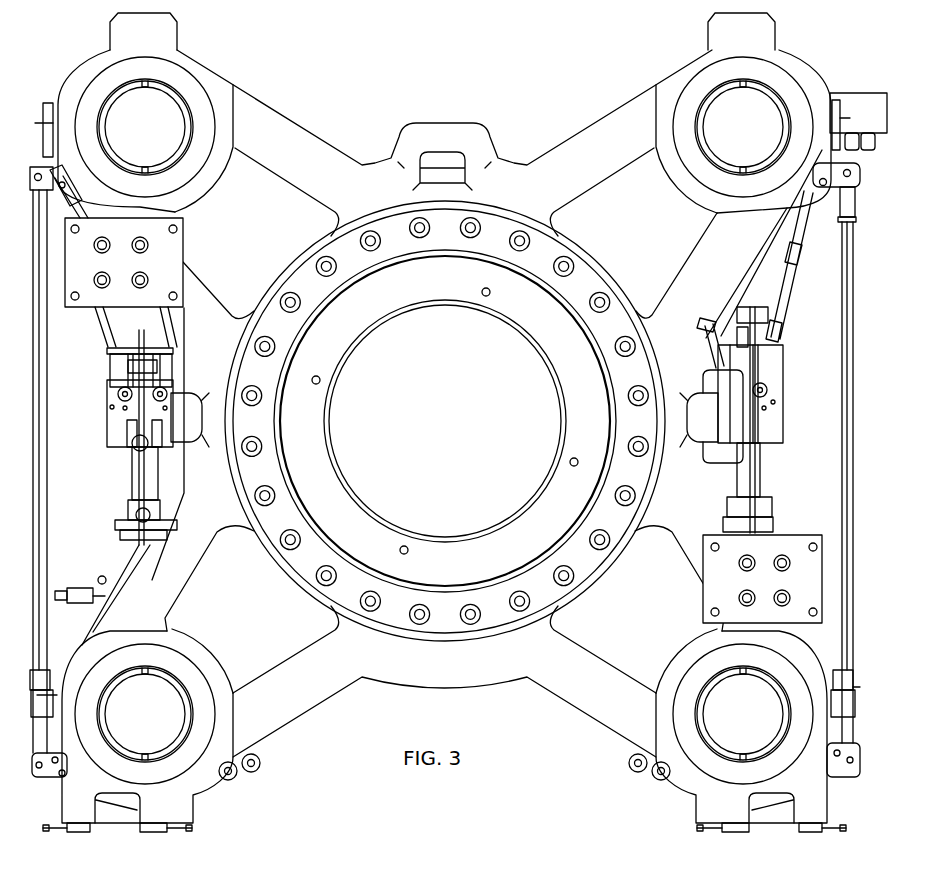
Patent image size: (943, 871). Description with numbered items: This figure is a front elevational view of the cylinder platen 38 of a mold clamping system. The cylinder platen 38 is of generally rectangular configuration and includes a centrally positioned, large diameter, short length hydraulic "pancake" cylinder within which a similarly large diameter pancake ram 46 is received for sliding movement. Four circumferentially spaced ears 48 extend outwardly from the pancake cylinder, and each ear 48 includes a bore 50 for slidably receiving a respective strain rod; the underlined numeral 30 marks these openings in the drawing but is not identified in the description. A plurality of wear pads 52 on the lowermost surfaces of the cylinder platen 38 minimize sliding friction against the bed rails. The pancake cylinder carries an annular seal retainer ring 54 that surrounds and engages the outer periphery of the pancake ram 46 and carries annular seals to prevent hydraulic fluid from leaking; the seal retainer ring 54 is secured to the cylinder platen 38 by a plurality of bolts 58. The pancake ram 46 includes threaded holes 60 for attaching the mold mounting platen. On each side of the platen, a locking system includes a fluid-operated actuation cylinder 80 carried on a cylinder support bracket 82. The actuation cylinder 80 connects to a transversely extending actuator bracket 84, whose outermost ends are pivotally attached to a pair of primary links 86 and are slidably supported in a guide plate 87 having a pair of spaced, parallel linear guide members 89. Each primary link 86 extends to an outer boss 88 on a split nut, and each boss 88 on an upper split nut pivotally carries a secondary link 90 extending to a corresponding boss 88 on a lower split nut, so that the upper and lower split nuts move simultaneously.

The roll journal opening 30 is at (131, 139).
The cylinder platen 38 is at (424, 91).
The pancake ram 46 is at (437, 432).
The ears 48 is at (263, 118).
The bore 50 is at (167, 88).
The wear pads 52 is at (140, 833).
The seal retainer ring 54 is at (547, 252).
The bolts 58 is at (603, 298).
The threaded holes 60 is at (316, 384).
The actuation cylinder 80 is at (135, 483).
The cylinder support bracket 82 is at (173, 525).
The actuator bracket 84 is at (127, 388).
The primary links 86 is at (107, 323).
The guide plate 87 is at (117, 441).
The outer boss 88 is at (857, 167).
The linear guide members 89 is at (117, 407).
The secondary link 90 is at (45, 570).